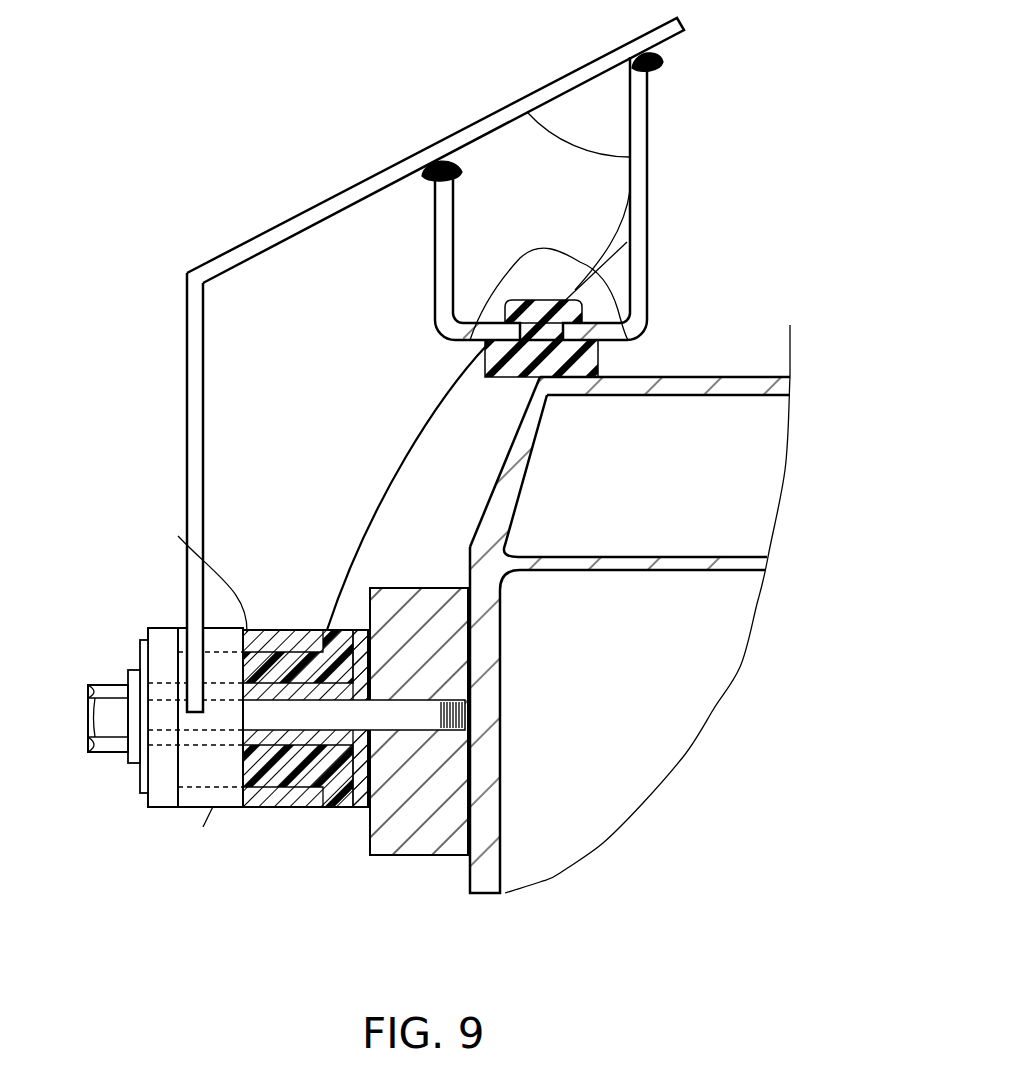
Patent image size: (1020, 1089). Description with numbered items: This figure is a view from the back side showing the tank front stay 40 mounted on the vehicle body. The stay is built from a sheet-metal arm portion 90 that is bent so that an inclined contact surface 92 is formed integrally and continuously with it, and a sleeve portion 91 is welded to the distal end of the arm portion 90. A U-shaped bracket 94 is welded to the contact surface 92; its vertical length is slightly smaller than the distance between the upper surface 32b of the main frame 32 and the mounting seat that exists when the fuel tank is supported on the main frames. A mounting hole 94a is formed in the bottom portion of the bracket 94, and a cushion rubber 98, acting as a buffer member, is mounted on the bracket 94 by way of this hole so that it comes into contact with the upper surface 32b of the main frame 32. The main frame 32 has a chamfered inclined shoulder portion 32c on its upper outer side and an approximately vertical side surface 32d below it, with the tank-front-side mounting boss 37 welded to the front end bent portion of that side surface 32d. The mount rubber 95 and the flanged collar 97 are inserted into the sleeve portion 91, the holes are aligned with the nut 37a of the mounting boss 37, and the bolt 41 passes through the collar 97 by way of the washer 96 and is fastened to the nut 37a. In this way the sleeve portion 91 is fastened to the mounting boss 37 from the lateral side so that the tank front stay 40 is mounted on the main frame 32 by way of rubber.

The tank front stay 40 is at (403, 365).
The contact surface 92 is at (487, 118).
The arm portion 90 is at (245, 385).
The U-shaped bracket 94 is at (647, 178).
The mounting hole 94a is at (575, 310).
The main frame 32 is at (590, 620).
The upper surface 32b is at (745, 377).
The inclined shoulder portion 32c is at (490, 498).
The side surface 32d is at (490, 857).
The cushion rubber 98 is at (558, 395).
The tank-front-side mounting boss 37 is at (418, 837).
The nut 37a is at (465, 717).
The bolt 41 is at (105, 745).
The washer 96 is at (143, 797).
The sleeve portion 91 is at (247, 807).
The mount rubber 95 is at (265, 773).
The flanged collar 97 is at (363, 808).